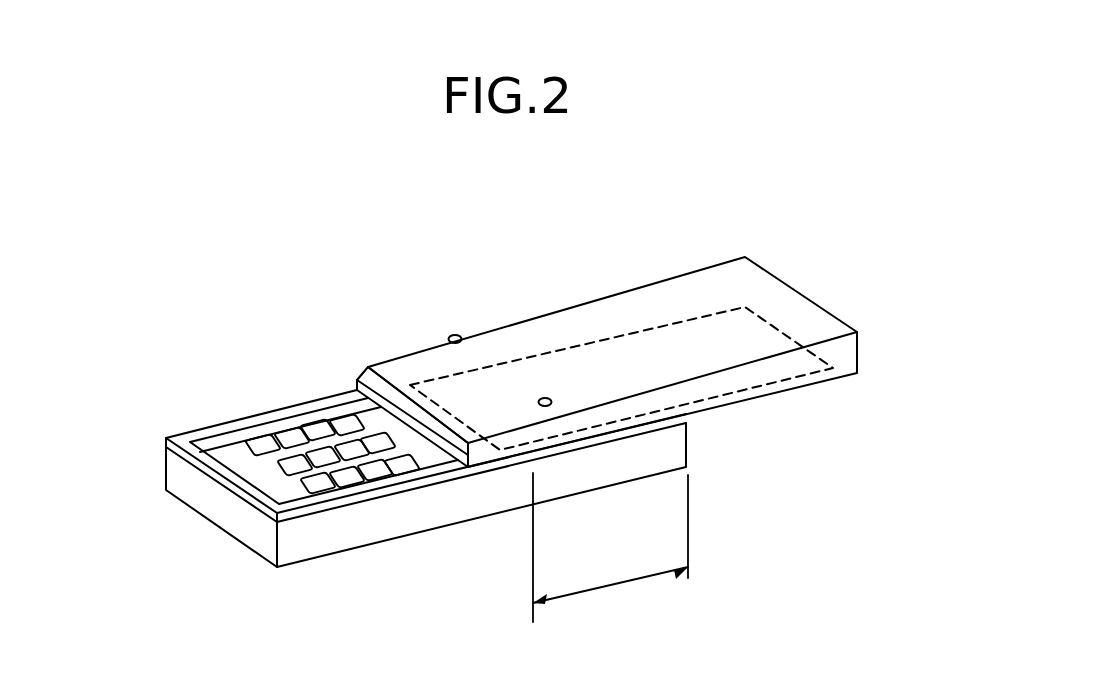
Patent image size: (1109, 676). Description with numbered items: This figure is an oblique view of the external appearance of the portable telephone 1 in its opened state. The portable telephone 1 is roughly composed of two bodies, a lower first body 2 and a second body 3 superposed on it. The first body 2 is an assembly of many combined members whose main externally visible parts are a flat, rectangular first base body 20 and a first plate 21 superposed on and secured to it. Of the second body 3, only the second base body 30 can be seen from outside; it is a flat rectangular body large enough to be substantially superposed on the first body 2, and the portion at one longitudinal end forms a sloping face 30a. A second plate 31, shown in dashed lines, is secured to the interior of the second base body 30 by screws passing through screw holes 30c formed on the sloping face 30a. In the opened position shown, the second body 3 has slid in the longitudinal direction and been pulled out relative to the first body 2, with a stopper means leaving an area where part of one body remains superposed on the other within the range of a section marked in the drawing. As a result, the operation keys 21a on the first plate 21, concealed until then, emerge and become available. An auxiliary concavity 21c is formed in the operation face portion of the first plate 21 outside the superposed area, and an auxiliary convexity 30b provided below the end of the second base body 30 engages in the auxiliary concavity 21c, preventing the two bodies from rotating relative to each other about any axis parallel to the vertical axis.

The portable telephone 1 is at (676, 224).
The first body 2 is at (90, 422).
The first base body 20 is at (166, 483).
The first plate 21 is at (166, 442).
The operation keys 21a is at (316, 428).
The auxiliary concavity 21c is at (290, 493).
The second body 3 is at (923, 268).
The second base body 30 is at (795, 300).
The sloping face 30a is at (419, 350).
The auxiliary convexity 30b is at (436, 441).
The screw holes 30c is at (546, 398).
The second plate 31 is at (818, 357).